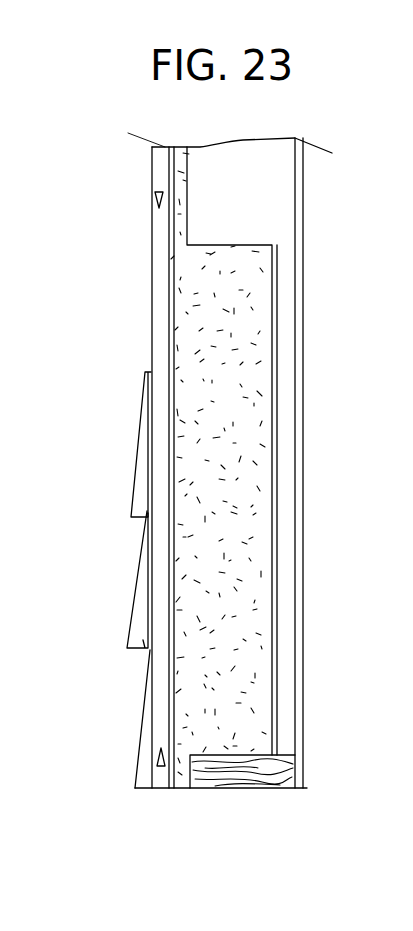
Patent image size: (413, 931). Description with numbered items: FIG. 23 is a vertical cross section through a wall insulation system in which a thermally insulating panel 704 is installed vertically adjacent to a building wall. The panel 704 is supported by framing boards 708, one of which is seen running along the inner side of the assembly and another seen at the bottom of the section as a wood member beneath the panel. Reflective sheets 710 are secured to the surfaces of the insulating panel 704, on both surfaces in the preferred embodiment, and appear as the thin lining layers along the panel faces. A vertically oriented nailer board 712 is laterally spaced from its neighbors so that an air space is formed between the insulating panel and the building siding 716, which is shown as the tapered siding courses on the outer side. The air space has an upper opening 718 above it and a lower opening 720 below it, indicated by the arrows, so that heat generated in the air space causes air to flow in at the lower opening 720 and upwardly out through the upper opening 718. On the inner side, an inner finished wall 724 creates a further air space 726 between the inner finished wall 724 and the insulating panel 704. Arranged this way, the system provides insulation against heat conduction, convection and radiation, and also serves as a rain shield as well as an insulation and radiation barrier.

The thermally insulating panel 704 is at (252, 465).
The framing board 708 is at (292, 463).
The reflective sheet 710 is at (172, 288).
The nailer board 712 is at (162, 327).
The building siding 716 is at (140, 460).
The upper opening 718 is at (160, 192).
The lower opening 720 is at (161, 766).
The inner finished wall 724 is at (305, 398).
The air space 726 is at (292, 480).